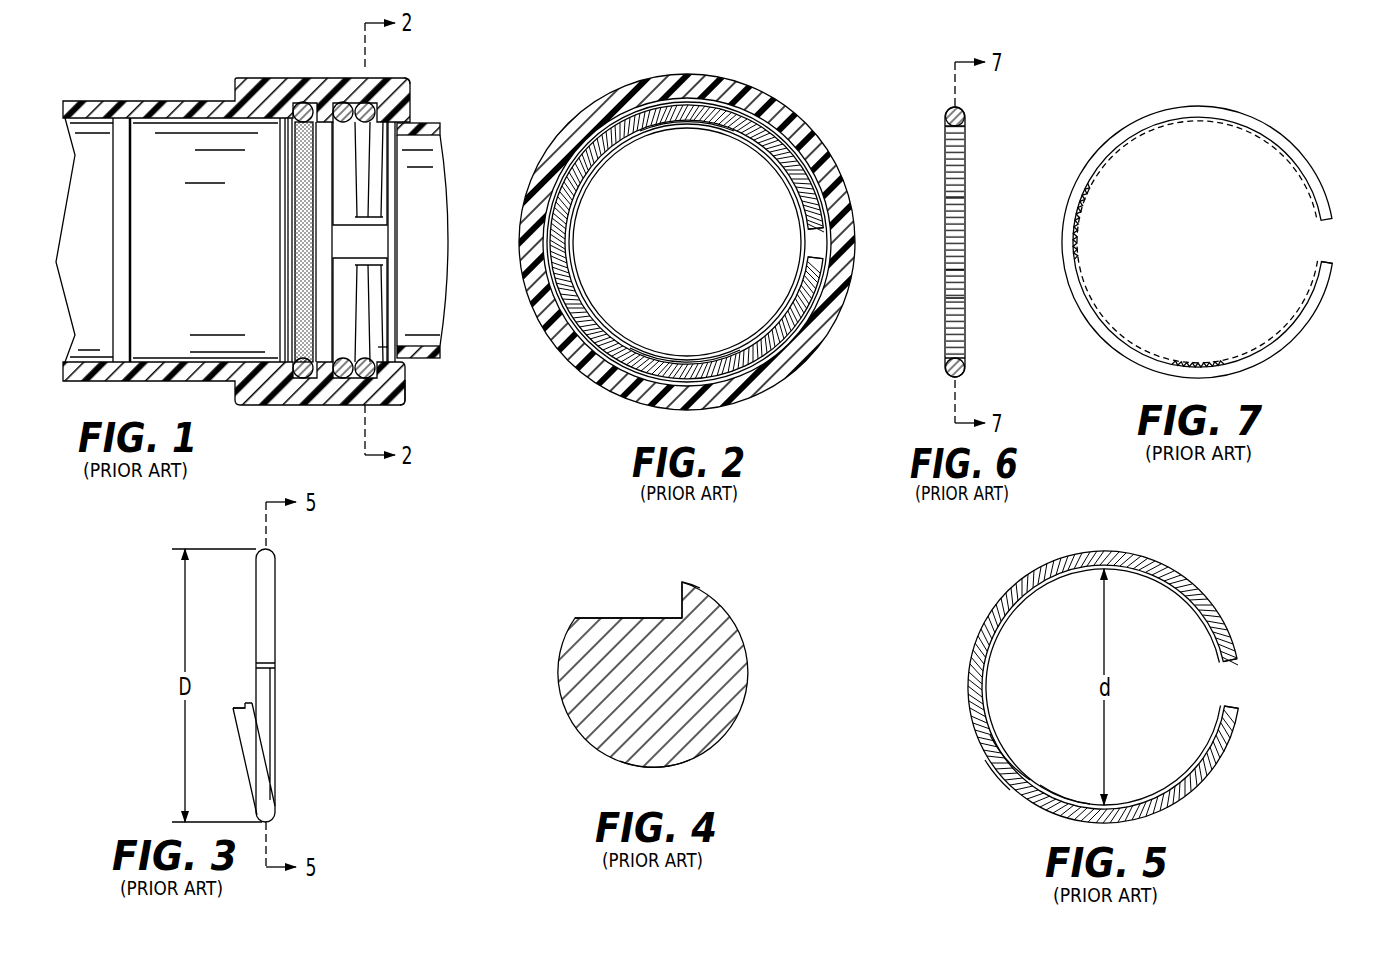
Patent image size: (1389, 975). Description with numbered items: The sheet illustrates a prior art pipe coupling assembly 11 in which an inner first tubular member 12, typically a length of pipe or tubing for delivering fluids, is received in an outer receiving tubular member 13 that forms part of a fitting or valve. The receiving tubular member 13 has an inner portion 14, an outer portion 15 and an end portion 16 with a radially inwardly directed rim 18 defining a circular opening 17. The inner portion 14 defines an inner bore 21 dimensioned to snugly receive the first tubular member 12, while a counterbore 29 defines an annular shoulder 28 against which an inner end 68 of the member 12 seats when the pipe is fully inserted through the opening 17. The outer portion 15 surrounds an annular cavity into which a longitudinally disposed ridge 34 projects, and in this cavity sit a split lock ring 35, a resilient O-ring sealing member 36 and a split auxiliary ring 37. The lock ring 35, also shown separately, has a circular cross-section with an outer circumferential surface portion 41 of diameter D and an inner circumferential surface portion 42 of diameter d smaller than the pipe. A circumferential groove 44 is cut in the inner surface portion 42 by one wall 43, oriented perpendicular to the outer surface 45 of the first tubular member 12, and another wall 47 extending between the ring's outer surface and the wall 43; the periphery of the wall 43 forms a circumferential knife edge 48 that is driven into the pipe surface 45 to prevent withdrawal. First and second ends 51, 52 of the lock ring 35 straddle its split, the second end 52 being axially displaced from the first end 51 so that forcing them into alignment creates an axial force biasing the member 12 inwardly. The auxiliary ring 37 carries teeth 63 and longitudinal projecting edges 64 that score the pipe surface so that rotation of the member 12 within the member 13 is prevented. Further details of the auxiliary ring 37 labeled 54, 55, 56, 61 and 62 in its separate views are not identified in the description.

In FIG. 1, the pipe coupling assembly 11 is at (456, 86).
In FIG. 1, the first tubular member 12 is at (445, 120).
In FIG. 1, the receiving tubular member 13 is at (160, 99).
In FIG. 1, the inner portion 14 is at (146, 255).
In FIG. 1, the outer portion 15 is at (322, 406).
In FIG. 2, the outer portion 15 is at (773, 83).
In FIG. 1, the end portion 16 is at (410, 388).
In FIG. 1, the circular opening 17 is at (413, 120).
In FIG. 1, the rim 18 is at (413, 118).
In FIG. 1, the inner bore 21 is at (195, 125).
In FIG. 1, the annular shoulder 28 is at (133, 358).
In FIG. 1, the counterbore 29 is at (125, 133).
In FIG. 2, the ridge 34 is at (813, 243).
In FIG. 1, the split lock ring 35 is at (364, 100).
In FIG. 2, the split lock ring 35 is at (561, 241).
In FIG. 3, the split lock ring 35 is at (278, 586).
In FIG. 4, the split lock ring 35 is at (751, 699).
In FIG. 5, the split lock ring 35 is at (1190, 566).
In FIG. 1, the sealing member 36 is at (299, 100).
In FIG. 1, the split auxiliary ring 37 is at (340, 100).
In FIG. 6, the split auxiliary ring 37 is at (968, 152).
In FIG. 2, the outer circumferential surface portion 41 is at (575, 140).
In FIG. 4, the outer circumferential surface portion 41 is at (654, 768).
In FIG. 5, the outer circumferential surface portion 41 is at (988, 764).
In FIG. 2, the inner circumferential surface portion 42 is at (702, 122).
In FIG. 4, the inner circumferential surface portion 42 is at (693, 584).
In FIG. 5, the inner circumferential surface portion 42 is at (1066, 796).
In FIG. 4, the one wall 43 is at (678, 602).
In FIG. 2, the circumferential groove 44 is at (662, 365).
In FIG. 3, the circumferential groove 44 is at (262, 726).
In FIG. 4, the circumferential groove 44 is at (638, 615).
In FIG. 5, the circumferential groove 44 is at (1013, 762).
In FIG. 1, the outer surface 45 is at (432, 364).
In FIG. 4, the another wall 47 is at (592, 618).
In FIG. 4, the knife edge 48 is at (682, 582).
In FIG. 5, the knife edge 48 is at (987, 672).
In FIG. 2, the first end 51 is at (853, 232).
In FIG. 3, the first end 51 is at (255, 664).
In FIG. 5, the first end 51 is at (1242, 668).
In FIG. 2, the second end 52 is at (826, 250).
In FIG. 3, the second end 52 is at (233, 708).
In FIG. 5, the second end 52 is at (1240, 702).
In FIG. 7, the first end of spring ring 54 is at (1335, 222).
In FIG. 7, the second end of spring ring 55 is at (1333, 258).
In FIG. 7, the gap 56 is at (1324, 244).
In FIG. 6, the spring ring wire 61 is at (947, 112).
In FIG. 6, the spring coil 62 is at (958, 197).
In FIG. 6, the teeth 63 is at (965, 270).
In FIG. 7, the teeth 63 is at (1077, 244).
In FIG. 7, the longitudinal projecting edges 64 is at (1083, 272).
In FIG. 1, the inner end 68 is at (378, 347).